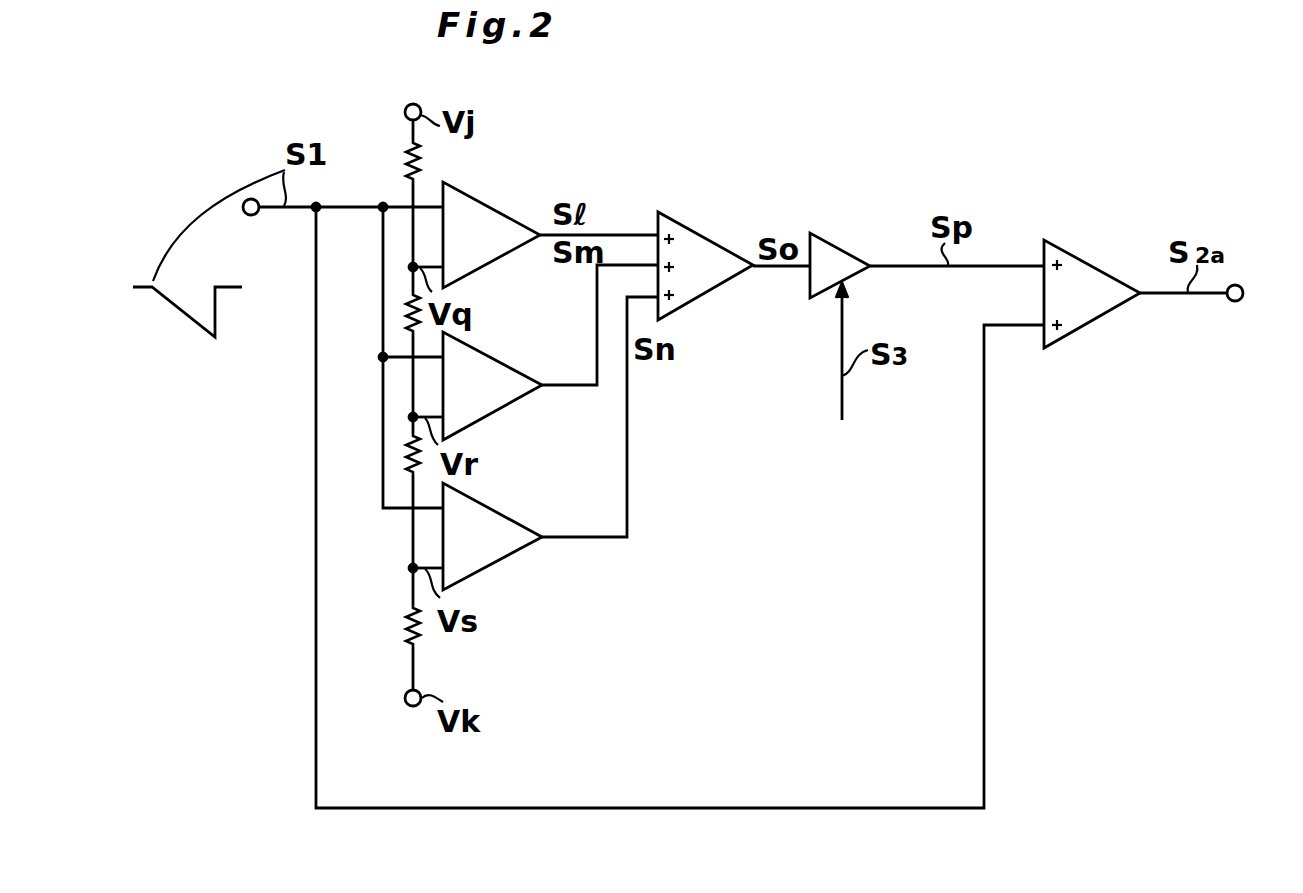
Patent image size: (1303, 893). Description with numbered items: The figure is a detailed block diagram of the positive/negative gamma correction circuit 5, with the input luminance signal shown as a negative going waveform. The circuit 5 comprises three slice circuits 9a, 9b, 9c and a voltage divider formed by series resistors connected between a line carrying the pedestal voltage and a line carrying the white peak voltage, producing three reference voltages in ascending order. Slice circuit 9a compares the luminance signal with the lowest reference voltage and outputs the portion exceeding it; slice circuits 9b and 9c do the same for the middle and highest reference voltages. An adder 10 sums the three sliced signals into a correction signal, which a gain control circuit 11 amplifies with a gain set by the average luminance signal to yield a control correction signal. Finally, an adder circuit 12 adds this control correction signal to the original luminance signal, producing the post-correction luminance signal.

The positive/negative gamma correction circuit 5 is at (752, 138).
The slice circuit 9a is at (480, 200).
The slice circuit 9b is at (497, 358).
The slice circuit 9c is at (500, 512).
The adder 10 is at (710, 292).
The gain control circuit 11 is at (812, 297).
The adder circuit 12 is at (1098, 268).